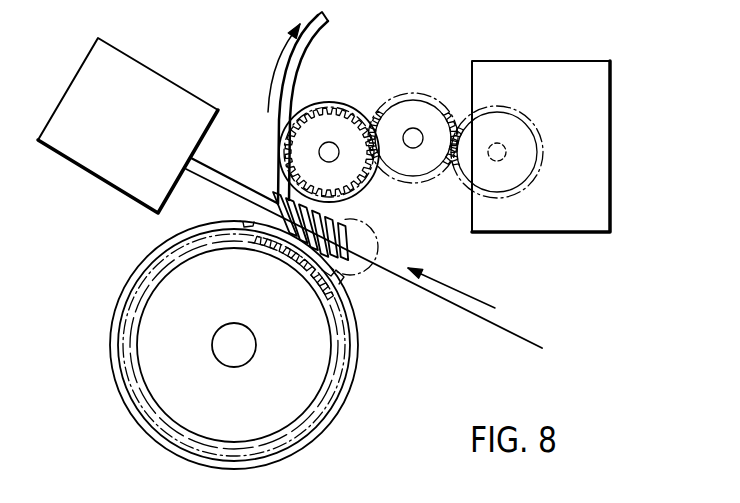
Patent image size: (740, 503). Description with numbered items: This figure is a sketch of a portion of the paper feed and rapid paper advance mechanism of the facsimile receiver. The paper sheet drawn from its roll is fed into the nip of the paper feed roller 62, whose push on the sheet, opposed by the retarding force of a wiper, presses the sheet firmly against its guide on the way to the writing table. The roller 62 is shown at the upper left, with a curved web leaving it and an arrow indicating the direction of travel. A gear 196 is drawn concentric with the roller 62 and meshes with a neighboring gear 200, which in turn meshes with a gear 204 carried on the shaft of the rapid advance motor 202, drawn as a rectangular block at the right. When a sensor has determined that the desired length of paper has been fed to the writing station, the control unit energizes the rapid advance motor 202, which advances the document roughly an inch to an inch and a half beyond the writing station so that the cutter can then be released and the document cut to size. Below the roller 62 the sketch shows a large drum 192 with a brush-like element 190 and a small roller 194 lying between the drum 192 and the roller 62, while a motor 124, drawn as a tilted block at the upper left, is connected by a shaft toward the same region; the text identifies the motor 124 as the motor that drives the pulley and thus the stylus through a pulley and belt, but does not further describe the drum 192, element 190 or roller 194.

The motor 124 is at (173, 82).
The paper feed roller 62 is at (343, 75).
The gear 196 is at (332, 128).
The idler gear 200 is at (405, 115).
The rapid advance motor 202 is at (582, 61).
The drive gear 204 is at (507, 130).
The brush 190 is at (318, 236).
The roller 194 is at (378, 247).
The drum 192 is at (357, 353).